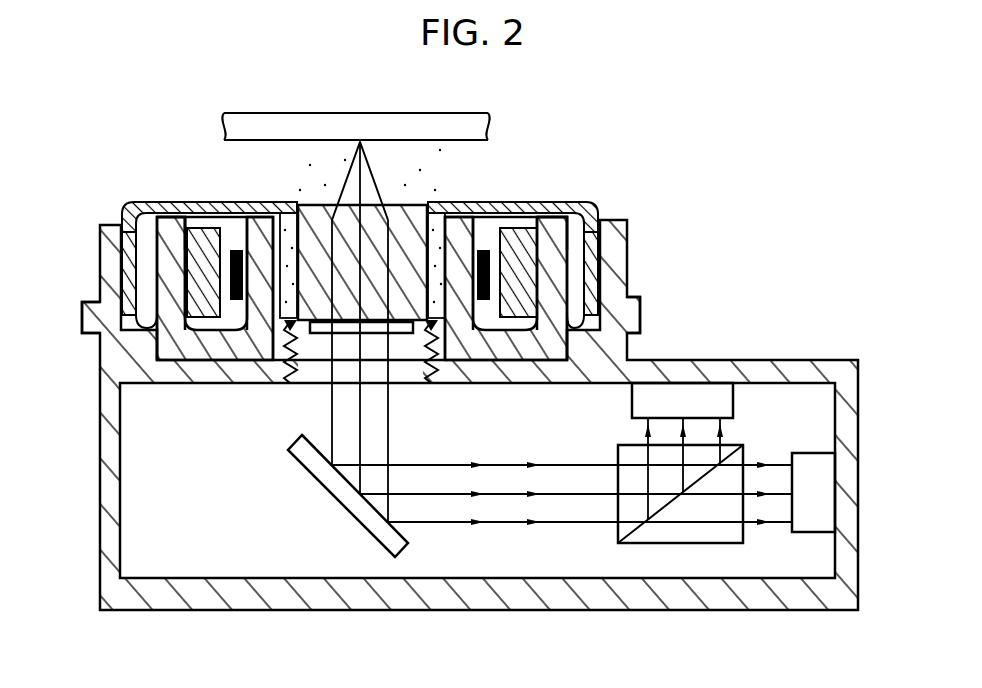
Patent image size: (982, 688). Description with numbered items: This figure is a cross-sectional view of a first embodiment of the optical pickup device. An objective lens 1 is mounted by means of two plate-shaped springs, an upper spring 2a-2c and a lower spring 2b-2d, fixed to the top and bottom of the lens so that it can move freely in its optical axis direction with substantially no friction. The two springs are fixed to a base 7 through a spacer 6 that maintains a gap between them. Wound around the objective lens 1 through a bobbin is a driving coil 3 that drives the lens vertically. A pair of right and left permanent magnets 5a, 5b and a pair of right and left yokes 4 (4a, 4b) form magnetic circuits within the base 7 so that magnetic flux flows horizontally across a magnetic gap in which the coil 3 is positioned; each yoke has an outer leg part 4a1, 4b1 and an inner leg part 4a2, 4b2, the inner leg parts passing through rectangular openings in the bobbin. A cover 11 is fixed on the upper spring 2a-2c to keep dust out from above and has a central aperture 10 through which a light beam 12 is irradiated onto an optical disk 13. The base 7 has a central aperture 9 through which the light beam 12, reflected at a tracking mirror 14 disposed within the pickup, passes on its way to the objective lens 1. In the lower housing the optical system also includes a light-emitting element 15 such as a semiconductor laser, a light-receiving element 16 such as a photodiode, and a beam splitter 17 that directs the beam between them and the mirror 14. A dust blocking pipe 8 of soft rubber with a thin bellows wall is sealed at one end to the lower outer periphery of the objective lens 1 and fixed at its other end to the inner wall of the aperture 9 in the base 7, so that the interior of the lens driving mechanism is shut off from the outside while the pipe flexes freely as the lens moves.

The objective lens 1 is at (410, 222).
The plate-shaped spring (upper) 2a is at (587, 212).
The plate-shaped spring (lower) 2b is at (627, 348).
The plate-shaped spring (upper) 2c is at (127, 207).
The plate-shaped spring (lower) 2d is at (142, 333).
The driving coil 3 is at (233, 247).
The yokes 4 is at (193, 352).
The yoke 4a is at (547, 285).
The outer leg part of yoke 4a1 is at (558, 214).
The inner leg part of yoke 4a2 is at (462, 227).
The yoke 4b is at (177, 285).
The outer leg part of yoke 4b1 is at (170, 230).
The inner leg part of yoke 4b2 is at (260, 227).
The permanent magnet 5a is at (513, 253).
The permanent magnet 5b is at (200, 258).
The spacer 6 is at (600, 285).
The base 7 is at (582, 370).
The dust blocking pipe 8 is at (425, 345).
The aperture 9 is at (320, 375).
The aperture 10 is at (282, 210).
The cover 11 is at (555, 230).
The light beam 12 is at (430, 472).
The optical disk 13 is at (480, 118).
The tracking mirror 14 is at (325, 473).
The light-emitting element 15 is at (288, 360).
The light-receiving element 16 is at (435, 172).
The beam splitter 17 is at (703, 537).